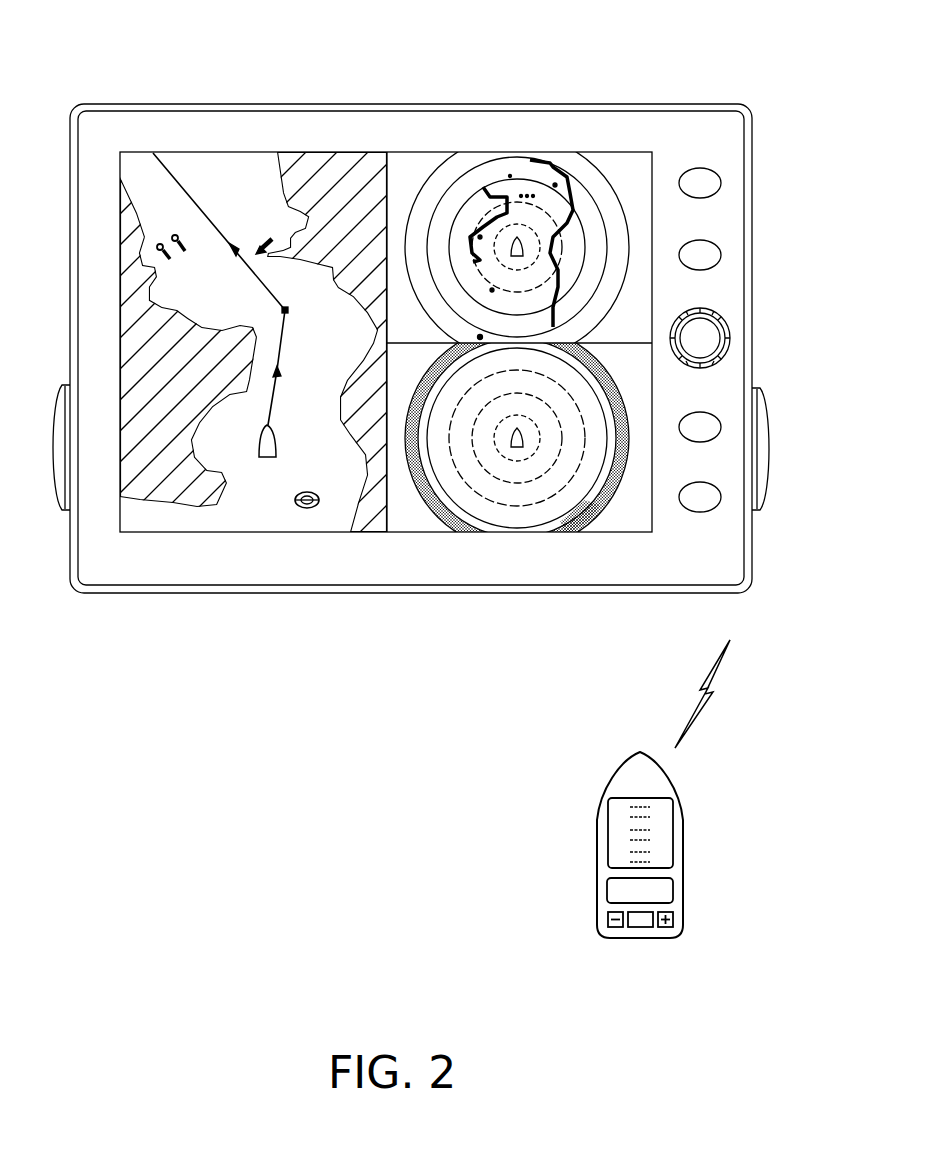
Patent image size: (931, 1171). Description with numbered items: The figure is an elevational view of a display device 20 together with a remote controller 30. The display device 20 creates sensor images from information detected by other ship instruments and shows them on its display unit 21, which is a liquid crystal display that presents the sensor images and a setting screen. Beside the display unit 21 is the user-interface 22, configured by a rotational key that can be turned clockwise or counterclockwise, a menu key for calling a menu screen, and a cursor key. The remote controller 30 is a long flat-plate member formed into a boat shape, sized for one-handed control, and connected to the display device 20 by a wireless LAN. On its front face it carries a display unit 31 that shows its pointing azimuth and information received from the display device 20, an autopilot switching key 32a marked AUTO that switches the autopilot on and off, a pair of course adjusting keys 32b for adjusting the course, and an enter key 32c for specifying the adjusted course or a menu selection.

The display device 20 is at (752, 98).
The display unit 21 is at (658, 166).
The user-interface 22 is at (732, 303).
The remote controller 30 is at (563, 764).
The display unit 31 is at (612, 838).
The autopilot switching key 32a is at (608, 893).
The course adjusting keys 32b is at (608, 925).
The enter key 32c is at (640, 930).